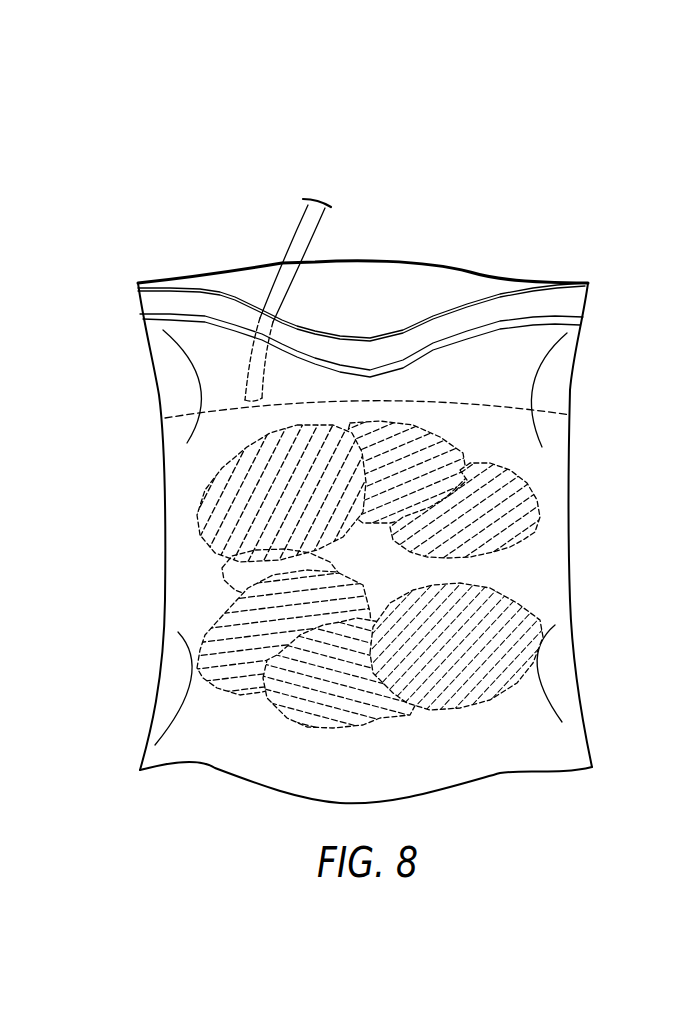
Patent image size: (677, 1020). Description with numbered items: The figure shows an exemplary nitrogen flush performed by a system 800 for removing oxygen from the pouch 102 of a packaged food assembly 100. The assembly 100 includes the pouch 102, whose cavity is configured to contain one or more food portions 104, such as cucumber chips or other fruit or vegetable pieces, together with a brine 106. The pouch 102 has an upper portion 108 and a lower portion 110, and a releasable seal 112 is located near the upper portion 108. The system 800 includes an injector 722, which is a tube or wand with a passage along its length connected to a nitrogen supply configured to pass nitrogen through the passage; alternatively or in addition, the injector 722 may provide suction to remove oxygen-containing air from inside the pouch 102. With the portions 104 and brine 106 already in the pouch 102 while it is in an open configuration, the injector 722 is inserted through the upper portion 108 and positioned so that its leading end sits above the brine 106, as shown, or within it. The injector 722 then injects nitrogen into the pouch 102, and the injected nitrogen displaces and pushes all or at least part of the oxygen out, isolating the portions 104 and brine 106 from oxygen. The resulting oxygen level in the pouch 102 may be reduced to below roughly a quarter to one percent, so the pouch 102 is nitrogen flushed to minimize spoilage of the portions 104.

The system 800 is at (432, 128).
The assembly 100 is at (507, 190).
The pouch 102 is at (160, 505).
The food portions 104 is at (540, 533).
The brine 106 is at (552, 457).
The upper portion 108 is at (240, 270).
The lower portion 110 is at (270, 790).
The releasable seal 112 is at (550, 317).
The injector 722 is at (295, 220).